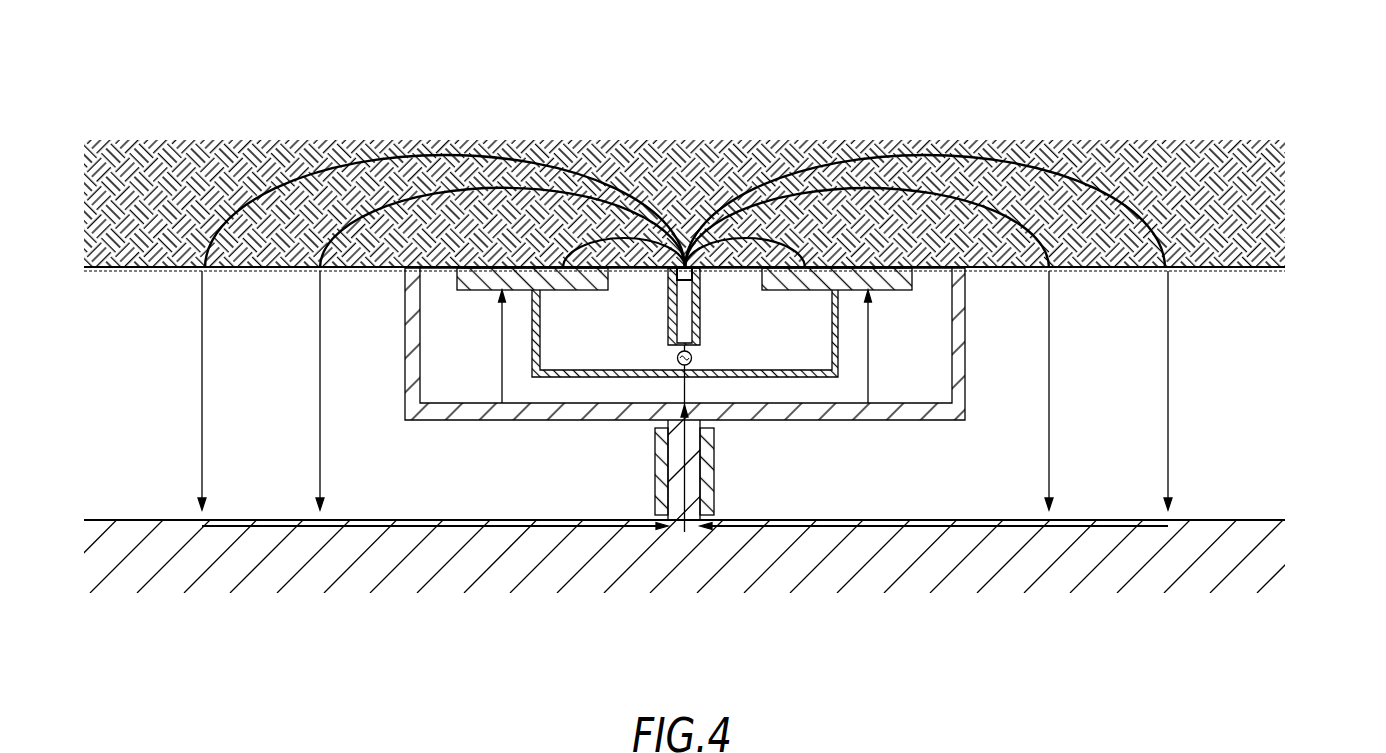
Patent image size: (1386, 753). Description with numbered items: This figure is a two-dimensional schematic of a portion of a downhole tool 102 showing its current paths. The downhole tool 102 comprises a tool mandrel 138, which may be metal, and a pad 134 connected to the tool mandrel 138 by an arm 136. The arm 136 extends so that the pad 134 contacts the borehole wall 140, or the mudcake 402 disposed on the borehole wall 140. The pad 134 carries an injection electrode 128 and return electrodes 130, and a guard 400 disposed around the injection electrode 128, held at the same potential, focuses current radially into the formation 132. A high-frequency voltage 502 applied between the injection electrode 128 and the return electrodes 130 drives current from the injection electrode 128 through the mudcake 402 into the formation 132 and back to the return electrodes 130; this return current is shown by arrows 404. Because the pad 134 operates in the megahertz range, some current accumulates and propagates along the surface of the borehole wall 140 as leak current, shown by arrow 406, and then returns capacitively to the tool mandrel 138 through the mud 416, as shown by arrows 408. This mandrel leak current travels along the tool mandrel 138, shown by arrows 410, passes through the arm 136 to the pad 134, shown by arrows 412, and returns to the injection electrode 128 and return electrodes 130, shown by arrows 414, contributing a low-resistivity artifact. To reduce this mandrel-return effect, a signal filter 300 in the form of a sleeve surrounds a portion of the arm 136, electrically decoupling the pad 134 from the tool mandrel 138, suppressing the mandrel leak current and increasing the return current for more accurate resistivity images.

The downhole tool 102 is at (842, 620).
The injection electrode 128 is at (687, 267).
The return electrodes 130 is at (500, 267).
The formation 132 is at (1093, 162).
The pad 134 is at (396, 298).
The arm 136 is at (720, 476).
The tool mandrel 138 is at (580, 566).
The borehole wall 140 is at (1250, 277).
The signal filter 300 is at (645, 497).
The guard 400 is at (668, 293).
The mudcake 402 is at (243, 267).
The arrows (return current) 404 is at (748, 240).
The arrow (leak current) 406 is at (372, 157).
The arrows (mandrel leak current through mud) 408 is at (200, 445).
The arrows (current along tool mandrel) 410 is at (503, 528).
The arrows (current through arm) 412 is at (688, 442).
The arrows (current return to electrodes) 414 is at (500, 325).
The mud 416 is at (960, 477).
The voltage 502 is at (692, 355).